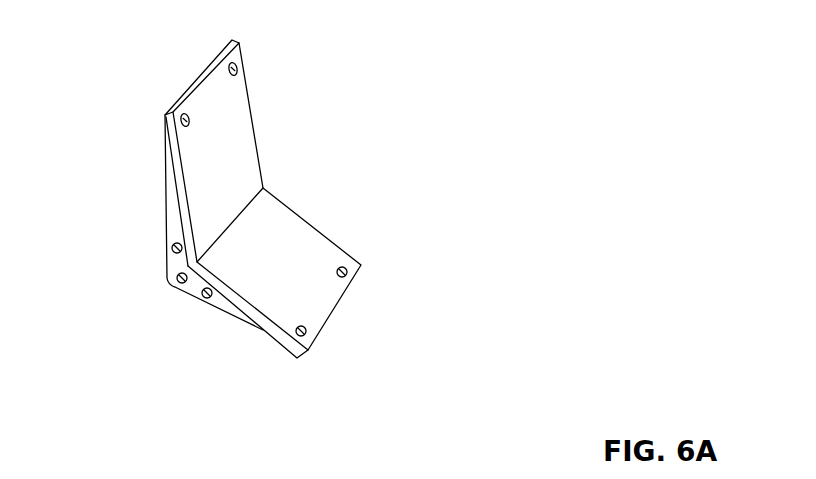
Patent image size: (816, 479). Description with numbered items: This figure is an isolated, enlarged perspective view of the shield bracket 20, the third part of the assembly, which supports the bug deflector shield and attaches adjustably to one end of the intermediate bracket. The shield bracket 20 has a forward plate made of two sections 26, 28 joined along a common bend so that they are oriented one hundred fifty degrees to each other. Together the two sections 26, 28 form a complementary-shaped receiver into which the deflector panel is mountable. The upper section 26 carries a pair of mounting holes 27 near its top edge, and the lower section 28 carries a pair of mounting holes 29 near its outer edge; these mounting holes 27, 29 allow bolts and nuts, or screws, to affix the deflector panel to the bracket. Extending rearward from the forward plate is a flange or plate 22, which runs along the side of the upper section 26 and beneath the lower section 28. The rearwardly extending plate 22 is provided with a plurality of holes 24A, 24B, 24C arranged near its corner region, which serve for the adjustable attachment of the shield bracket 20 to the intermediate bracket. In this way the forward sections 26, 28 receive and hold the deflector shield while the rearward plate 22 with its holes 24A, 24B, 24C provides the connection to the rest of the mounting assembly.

The shield bracket 20 is at (237, 213).
The rearwardly extending plate 22 is at (228, 308).
The hole 24A is at (173, 247).
The hole 24B is at (177, 283).
The hole 24C is at (203, 302).
The forward plate section 26 is at (232, 155).
The mounting hole 27 is at (183, 118).
The forward plate section 28 is at (312, 242).
The mounting hole 29 is at (348, 270).